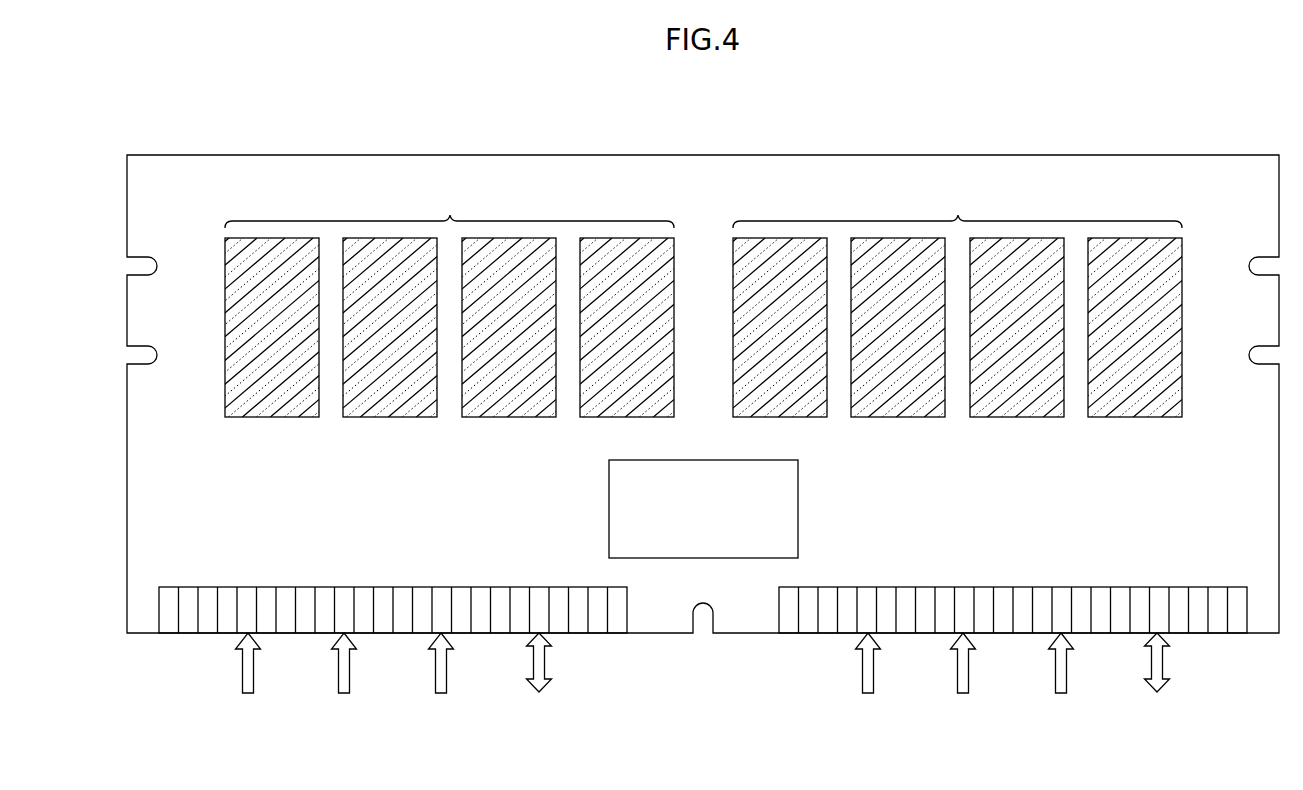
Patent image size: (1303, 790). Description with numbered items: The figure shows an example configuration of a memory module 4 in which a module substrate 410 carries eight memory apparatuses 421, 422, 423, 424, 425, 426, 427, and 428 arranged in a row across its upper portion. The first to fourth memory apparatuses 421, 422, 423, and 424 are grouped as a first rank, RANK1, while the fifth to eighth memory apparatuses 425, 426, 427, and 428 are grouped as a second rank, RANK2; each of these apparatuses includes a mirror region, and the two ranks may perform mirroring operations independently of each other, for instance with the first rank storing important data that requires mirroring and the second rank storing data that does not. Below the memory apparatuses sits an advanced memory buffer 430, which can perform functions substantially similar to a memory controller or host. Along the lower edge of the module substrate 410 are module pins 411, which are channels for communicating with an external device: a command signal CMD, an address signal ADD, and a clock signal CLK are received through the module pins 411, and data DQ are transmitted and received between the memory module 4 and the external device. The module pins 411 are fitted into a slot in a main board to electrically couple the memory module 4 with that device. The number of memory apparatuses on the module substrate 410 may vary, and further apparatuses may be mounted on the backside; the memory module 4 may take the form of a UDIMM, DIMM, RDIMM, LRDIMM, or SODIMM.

The memory module 4 is at (150, 101).
The module substrate 410 is at (1257, 548).
The module pins 411 is at (809, 630).
The first memory apparatus 421 is at (270, 417).
The second memory apparatus 422 is at (388, 417).
The third memory apparatus 423 is at (507, 417).
The fourth memory apparatus 424 is at (625, 417).
The fifth memory apparatus 425 is at (778, 417).
The sixth memory apparatus 426 is at (896, 417).
The seventh memory apparatus 427 is at (1015, 417).
The eighth memory apparatus 428 is at (1133, 417).
The advanced memory buffer 430 is at (719, 548).